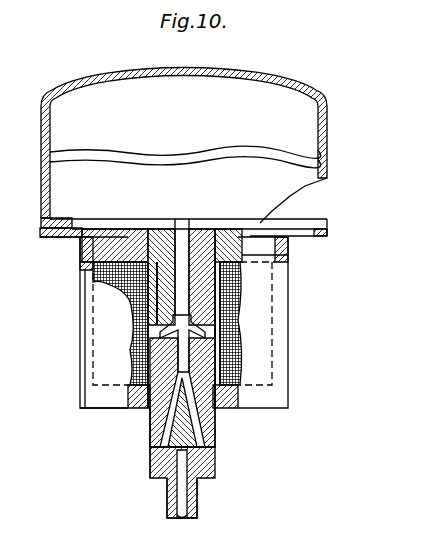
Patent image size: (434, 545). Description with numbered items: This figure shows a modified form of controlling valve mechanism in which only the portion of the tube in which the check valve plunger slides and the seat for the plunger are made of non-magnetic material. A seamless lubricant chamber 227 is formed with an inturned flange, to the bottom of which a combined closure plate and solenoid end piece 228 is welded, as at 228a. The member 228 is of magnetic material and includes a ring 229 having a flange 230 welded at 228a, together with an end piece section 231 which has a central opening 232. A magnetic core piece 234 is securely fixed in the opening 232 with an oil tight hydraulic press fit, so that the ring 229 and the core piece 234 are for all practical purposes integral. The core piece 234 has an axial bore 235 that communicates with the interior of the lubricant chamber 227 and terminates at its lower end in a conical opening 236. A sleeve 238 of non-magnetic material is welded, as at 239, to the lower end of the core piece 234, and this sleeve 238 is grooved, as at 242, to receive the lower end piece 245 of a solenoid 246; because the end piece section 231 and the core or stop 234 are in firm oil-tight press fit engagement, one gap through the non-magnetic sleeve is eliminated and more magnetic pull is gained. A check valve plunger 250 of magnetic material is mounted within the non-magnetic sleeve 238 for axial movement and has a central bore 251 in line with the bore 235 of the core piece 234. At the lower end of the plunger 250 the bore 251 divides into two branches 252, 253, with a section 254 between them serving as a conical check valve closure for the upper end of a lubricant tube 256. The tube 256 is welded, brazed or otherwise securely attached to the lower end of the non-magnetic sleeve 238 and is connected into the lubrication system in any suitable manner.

The lubricant chamber 227 is at (90, 80).
The combined closure plate and solenoid end piece 228 is at (162, 219).
The weld 228a is at (335, 212).
The ring 229 is at (115, 232).
The flange 230 is at (46, 238).
The end piece section 231 is at (82, 263).
The central opening 232 is at (278, 254).
The magnetic core piece 234 is at (218, 230).
The axial bore 235 is at (184, 237).
The conical opening 236 is at (226, 340).
The sleeve 238 is at (218, 432).
The weld 239 is at (242, 302).
The groove 242 is at (232, 400).
The lower end piece 245 is at (126, 410).
The solenoid 246 is at (290, 316).
The check valve plunger 250 is at (150, 422).
The central bore 251 is at (180, 348).
The branch 252 is at (153, 450).
The branch 253 is at (213, 446).
The section 254 is at (216, 460).
The lubricant tube 256 is at (198, 507).